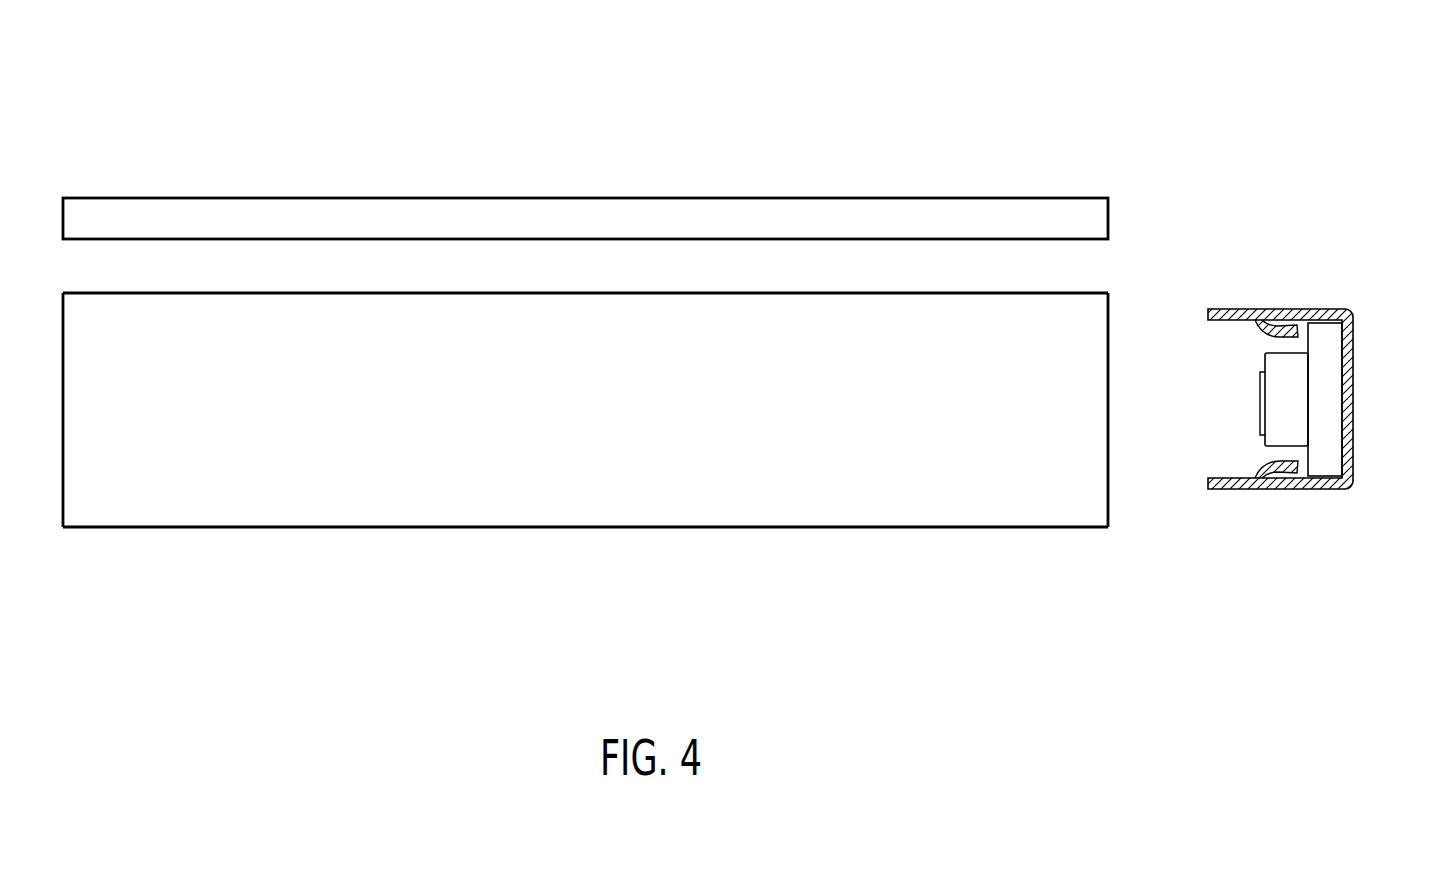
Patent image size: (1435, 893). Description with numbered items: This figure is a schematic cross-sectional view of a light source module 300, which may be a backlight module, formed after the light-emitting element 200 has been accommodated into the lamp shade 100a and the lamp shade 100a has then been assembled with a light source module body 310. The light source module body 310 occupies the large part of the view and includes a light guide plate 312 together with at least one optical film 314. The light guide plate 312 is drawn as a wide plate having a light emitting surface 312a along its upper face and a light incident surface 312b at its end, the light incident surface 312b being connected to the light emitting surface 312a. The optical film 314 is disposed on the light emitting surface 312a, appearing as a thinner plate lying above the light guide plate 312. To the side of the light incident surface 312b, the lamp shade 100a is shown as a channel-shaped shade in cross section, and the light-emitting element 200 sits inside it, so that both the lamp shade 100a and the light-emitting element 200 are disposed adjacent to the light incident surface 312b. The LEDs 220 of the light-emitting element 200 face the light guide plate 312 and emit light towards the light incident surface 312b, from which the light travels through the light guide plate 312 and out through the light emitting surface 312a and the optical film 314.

The light source module 300 is at (1052, 667).
The light source module body 310 is at (737, 87).
The light guide plate 312 is at (727, 330).
The optical film 314 is at (645, 217).
The light emitting surface 312a is at (268, 285).
The light incident surface 312b is at (1117, 336).
The lamp shade 100a is at (1291, 299).
The light-emitting element 200 is at (1243, 399).
The LED 220 is at (1297, 375).